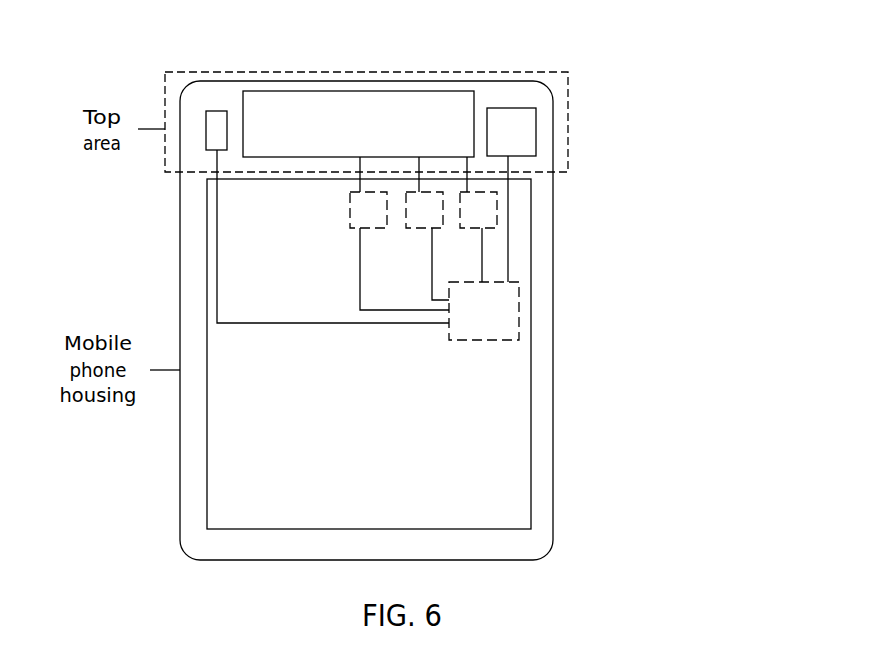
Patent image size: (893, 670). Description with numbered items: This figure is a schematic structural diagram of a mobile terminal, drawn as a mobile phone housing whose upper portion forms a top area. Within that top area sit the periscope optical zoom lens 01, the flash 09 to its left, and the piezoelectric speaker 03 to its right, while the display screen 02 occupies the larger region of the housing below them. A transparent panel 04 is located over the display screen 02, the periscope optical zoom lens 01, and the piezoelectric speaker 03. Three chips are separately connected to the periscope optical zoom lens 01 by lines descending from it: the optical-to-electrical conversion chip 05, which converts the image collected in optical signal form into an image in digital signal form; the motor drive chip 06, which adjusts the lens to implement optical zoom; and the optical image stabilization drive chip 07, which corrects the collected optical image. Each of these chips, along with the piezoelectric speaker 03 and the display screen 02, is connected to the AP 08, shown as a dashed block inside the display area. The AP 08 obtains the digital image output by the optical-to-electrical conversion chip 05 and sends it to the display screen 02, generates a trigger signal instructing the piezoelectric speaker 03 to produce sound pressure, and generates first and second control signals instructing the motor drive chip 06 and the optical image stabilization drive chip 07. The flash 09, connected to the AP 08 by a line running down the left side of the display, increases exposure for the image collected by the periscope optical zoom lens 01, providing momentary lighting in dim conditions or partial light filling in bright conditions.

The periscope optical zoom lens 01 is at (358, 141).
The display screen 02 is at (369, 354).
The piezoelectric speaker 03 is at (536, 137).
The transparent panel 04 is at (480, 94).
The optical-to-electrical conversion chip 05 is at (350, 210).
The motor drive chip 06 is at (418, 228).
The optical image stabilization drive chip 07 is at (477, 228).
The AP 08 is at (484, 311).
The flash 09 is at (217, 111).